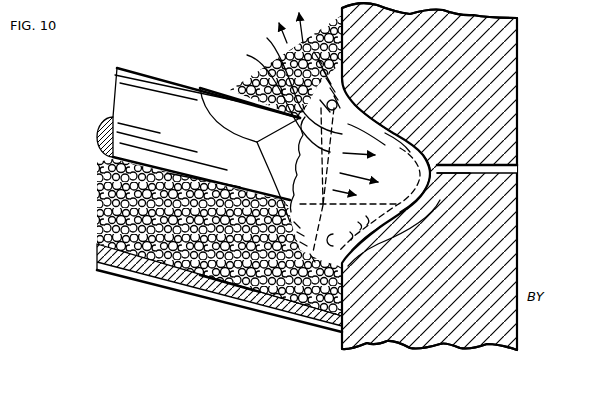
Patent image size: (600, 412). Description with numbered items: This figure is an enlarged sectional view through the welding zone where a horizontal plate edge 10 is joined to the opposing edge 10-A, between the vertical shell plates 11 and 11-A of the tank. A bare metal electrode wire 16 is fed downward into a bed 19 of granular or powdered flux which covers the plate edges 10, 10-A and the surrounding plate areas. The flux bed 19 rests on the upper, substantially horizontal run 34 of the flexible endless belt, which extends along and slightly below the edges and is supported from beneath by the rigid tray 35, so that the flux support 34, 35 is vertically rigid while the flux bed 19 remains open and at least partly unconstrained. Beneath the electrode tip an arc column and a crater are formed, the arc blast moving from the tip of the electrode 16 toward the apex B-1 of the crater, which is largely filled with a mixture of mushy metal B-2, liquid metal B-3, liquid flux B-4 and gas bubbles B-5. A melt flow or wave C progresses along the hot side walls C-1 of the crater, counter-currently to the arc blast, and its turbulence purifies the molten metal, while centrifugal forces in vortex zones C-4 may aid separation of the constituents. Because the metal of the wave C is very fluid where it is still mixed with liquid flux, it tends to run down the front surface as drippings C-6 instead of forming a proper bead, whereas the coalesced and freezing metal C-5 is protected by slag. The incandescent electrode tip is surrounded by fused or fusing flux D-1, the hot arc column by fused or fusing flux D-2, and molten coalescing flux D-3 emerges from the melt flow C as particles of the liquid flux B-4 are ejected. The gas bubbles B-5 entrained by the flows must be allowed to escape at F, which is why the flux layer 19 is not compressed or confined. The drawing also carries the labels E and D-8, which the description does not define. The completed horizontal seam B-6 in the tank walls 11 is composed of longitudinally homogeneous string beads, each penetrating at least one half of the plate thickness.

The plate edge 10 is at (518, 203).
The vertical plate 11 is at (342, 338).
The vertical plate 11-A is at (518, 22).
The plate edge 10-A is at (520, 168).
The bare metal electrode wire 16 is at (112, 88).
The flux bed 19 is at (240, 90).
The upper run of belt 34 is at (97, 246).
The tray 35 is at (97, 266).
The fused or fusing flux D-1 is at (200, 90).
The fused or fusing flux D-2 is at (255, 303).
The molten coalescing flux D-3 is at (340, 87).
The plate end layer D-8 is at (290, 316).
The gas escape location F is at (290, 24).
The drippings C-6 is at (274, 100).
The horizontal seam B-6 is at (290, 82).
The coalesced and freezing metal C-5 is at (345, 115).
The vortex zones C-4 is at (348, 124).
The side walls of crater C-1 is at (385, 133).
The melt flow C is at (412, 150).
The grout / sealing material E is at (433, 150).
The gas bubbles B-5 is at (432, 155).
The apex of crater B-1 is at (470, 175).
The mushy metal B-2 is at (413, 190).
The liquid metal B-3 is at (393, 215).
The liquid flux B-4 is at (343, 240).